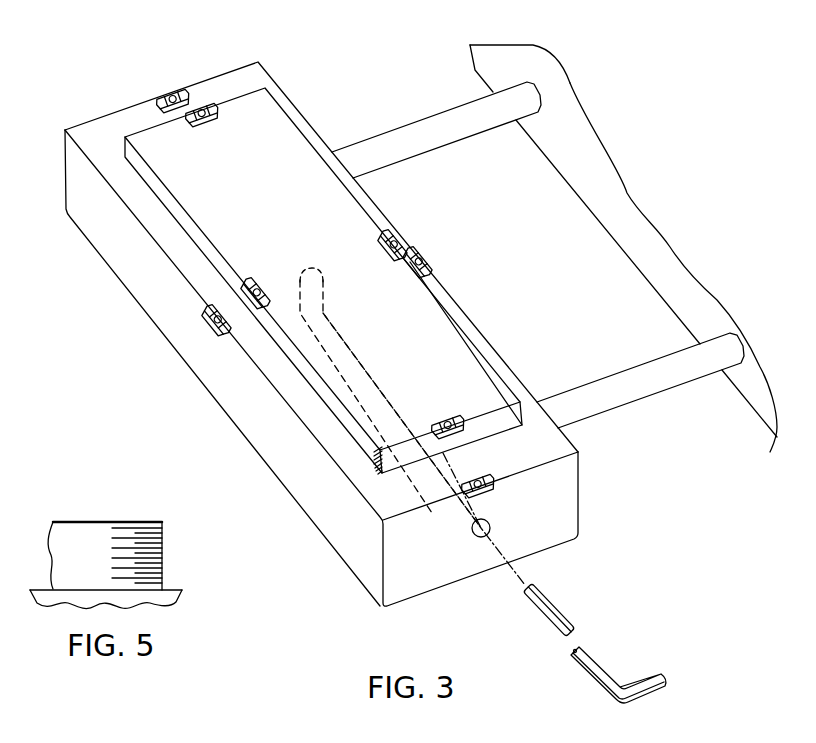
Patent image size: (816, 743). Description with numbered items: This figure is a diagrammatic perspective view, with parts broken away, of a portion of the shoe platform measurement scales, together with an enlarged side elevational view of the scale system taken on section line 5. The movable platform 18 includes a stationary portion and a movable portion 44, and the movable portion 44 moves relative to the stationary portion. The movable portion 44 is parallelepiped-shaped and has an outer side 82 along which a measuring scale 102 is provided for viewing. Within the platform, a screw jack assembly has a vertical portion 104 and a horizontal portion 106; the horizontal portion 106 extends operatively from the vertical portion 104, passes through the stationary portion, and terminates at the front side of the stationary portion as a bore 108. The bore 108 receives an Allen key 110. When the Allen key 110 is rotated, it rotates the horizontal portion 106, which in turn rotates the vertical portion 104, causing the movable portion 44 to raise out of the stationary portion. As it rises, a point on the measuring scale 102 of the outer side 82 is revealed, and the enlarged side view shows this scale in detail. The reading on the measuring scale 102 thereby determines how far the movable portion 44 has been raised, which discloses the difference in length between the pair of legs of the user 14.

In FIG. 3, the section line 5- 5 is at (123, 138).
In FIG. 5, the user 14 is at (166, 742).
In FIG. 3, the movable platform 18 is at (582, 475).
In FIG. 3, the movable portion 44 is at (247, 153).
In FIG. 3, the outer side 82 is at (200, 233).
In FIG. 3, the measuring scale 102 is at (376, 464).
In FIG. 5, the measuring scale 102 is at (152, 568).
In FIG. 3, the vertical portion 104 is at (313, 272).
In FIG. 3, the horizontal portion 106 is at (364, 376).
In FIG. 3, the bore 108 is at (480, 538).
In FIG. 3, the Allen key 110 is at (593, 694).